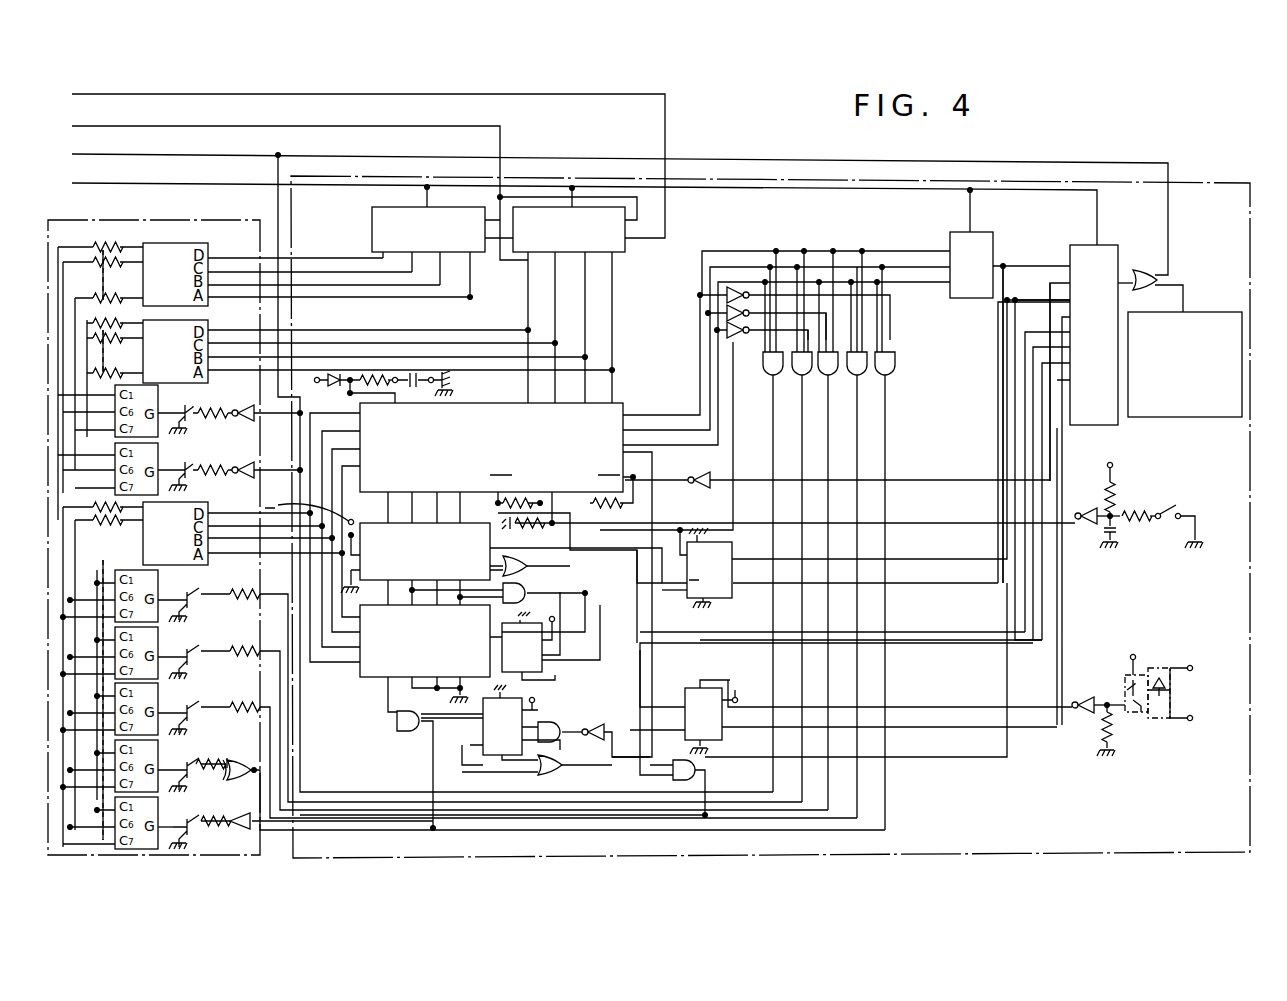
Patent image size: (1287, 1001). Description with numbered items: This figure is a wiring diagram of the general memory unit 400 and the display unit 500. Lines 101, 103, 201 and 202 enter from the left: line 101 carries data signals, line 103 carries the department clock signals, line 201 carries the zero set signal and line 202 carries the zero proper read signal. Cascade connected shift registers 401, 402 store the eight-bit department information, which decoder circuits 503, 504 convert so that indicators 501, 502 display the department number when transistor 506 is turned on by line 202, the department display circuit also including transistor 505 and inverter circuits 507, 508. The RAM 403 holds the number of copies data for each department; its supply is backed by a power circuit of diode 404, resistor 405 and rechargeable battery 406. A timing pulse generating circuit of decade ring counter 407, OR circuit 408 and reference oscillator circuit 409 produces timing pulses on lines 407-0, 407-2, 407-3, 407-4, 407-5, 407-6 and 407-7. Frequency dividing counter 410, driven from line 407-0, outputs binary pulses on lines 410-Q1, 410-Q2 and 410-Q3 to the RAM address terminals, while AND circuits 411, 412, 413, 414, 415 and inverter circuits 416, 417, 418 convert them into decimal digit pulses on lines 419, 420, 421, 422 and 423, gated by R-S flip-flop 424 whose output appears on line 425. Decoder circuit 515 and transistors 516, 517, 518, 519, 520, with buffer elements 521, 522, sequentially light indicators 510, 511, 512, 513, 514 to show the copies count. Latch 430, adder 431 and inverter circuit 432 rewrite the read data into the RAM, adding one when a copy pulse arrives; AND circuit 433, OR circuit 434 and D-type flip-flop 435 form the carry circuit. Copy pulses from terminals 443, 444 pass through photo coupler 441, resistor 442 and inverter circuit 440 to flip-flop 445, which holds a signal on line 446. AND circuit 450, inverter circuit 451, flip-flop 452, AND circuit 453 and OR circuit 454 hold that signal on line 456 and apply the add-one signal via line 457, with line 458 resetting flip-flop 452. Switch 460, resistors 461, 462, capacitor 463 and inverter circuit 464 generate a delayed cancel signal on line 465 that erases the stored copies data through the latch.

The line 101 is at (92, 94).
The line 103 is at (98, 126).
The line 202 is at (102, 154).
The line 201 is at (98, 183).
The general memory unit 400 is at (1225, 160).
The 4-bit shift register 401 is at (369, 214).
The 4-bit shift register 402 is at (636, 252).
The RAM 403 is at (640, 402).
The diode 404 is at (335, 385).
The resistor 405 is at (364, 374).
The rechargeable battery 406 is at (412, 375).
The decade ring counter 407 is at (1107, 244).
The OR circuit 408 is at (1146, 270).
The reference oscillator circuit 409 is at (1200, 310).
The frequency dividing counter 410 is at (1003, 225).
The output line 410-Q1 is at (916, 286).
The output line 410-Q2 is at (924, 262).
The output line 410-Q3 is at (874, 246).
The AND circuit 411 is at (893, 359).
The AND circuit 412 is at (811, 376).
The AND circuit 413 is at (836, 385).
The AND circuit 414 is at (798, 377).
The AND circuit 415 is at (767, 360).
The inverter circuit 416 is at (724, 294).
The inverter circuit 417 is at (724, 313).
The inverter circuit 418 is at (724, 332).
The line 419 is at (882, 414).
The line 420 is at (846, 436).
The line 421 is at (786, 456).
The line 422 is at (816, 433).
The line 423 is at (778, 410).
The R-S flip-flop 424 is at (732, 562).
The line 425 is at (674, 592).
The latch 430 is at (487, 588).
The adder 431 is at (369, 677).
The inverter circuit 432 is at (700, 477).
The AND circuit 433 is at (526, 600).
The OR circuit 434 is at (531, 558).
The D-type flip-flop 435 is at (547, 636).
The inverter circuit 440 is at (1082, 702).
The photo coupler 441 is at (924, 703).
The resistor 442 is at (1113, 728).
The terminal 443 is at (1191, 654).
The terminal 444 is at (1193, 720).
The D-type flip-flop 445 is at (715, 742).
The line 446 is at (670, 700).
The AND circuit 450 is at (522, 716).
The inverter circuit 451 is at (588, 730).
The D-type flip-flop 452 is at (478, 745).
The AND circuit 453 is at (412, 730).
The OR circuit 454 is at (529, 772).
The line 456 is at (481, 718).
The line 457 is at (388, 702).
The line 458 is at (672, 778).
The switch 460 is at (1179, 514).
The resistor 461 is at (1116, 490).
The resistor 462 is at (1139, 512).
The capacitor 463 is at (1118, 532).
The inverter circuit 464 is at (1083, 506).
The line 465 is at (920, 517).
The line 407-0 is at (1003, 322).
The line 407-2 is at (910, 562).
The line 407-3 is at (912, 725).
The line 407-4 is at (623, 553).
The line 407-5 is at (574, 680).
The line 407-6 is at (619, 644).
The line 407-7 is at (915, 484).
The display unit 500 is at (173, 220).
The seven-segment light emitting indicator 501 is at (152, 390).
The seven-segment light emitting indicator 502 is at (158, 456).
The indicating decoder circuit 503 is at (203, 247).
The indicating decoder circuit 504 is at (206, 322).
The transistor 505 is at (186, 426).
The transistor 506 is at (188, 480).
The inverter circuit 507 is at (240, 401).
The inverter circuit 508 is at (245, 458).
The seven-segment light emitting indicator 510 is at (163, 809).
The seven-segment light emitting indicator 511 is at (163, 752).
The seven-segment light emitting indicator 512 is at (163, 696).
The seven-segment light emitting indicator 513 is at (163, 637).
The seven-segment light emitting indicator 514 is at (152, 577).
The indicating decoder circuit 515 is at (208, 553).
The transistor 516 is at (188, 837).
The transistor 517 is at (179, 768).
The transistor 518 is at (199, 712).
The transistor 519 is at (203, 651).
The transistor 520 is at (188, 594).
The signal interference preventing buffer element 521 is at (245, 738).
The signal interference preventing buffer element 522 is at (236, 816).